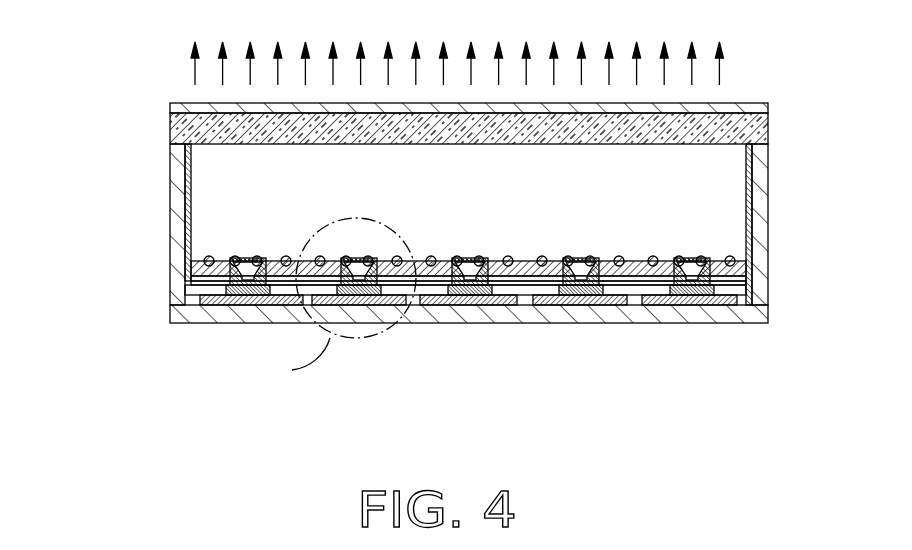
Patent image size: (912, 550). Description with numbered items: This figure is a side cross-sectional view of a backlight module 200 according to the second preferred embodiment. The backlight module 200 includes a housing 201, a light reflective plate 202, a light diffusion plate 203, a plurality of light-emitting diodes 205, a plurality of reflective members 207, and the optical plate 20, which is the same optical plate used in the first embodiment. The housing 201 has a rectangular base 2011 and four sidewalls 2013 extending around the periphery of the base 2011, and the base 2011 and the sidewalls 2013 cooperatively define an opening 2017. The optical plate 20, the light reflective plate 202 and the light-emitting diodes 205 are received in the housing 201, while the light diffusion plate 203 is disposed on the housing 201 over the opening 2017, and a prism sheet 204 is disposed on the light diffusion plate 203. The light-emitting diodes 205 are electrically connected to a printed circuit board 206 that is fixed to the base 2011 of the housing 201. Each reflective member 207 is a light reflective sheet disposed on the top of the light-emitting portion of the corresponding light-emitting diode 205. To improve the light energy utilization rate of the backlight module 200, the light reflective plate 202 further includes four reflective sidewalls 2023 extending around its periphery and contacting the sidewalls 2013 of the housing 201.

The backlight module 200 is at (146, 66).
The housing 201 is at (393, 251).
The base 2011 is at (424, 332).
The sidewalls 2013 is at (180, 205).
The opening 2017 is at (720, 180).
The reflective sidewalls 2023 is at (748, 207).
The light reflective plate 202 is at (733, 287).
The light diffusion plate 203 is at (760, 128).
The prism sheet 204 is at (733, 106).
The optical plate 20 is at (512, 249).
The light-emitting diodes 205 is at (510, 292).
The printed circuit board 206 is at (693, 298).
The reflective members 207 is at (470, 258).